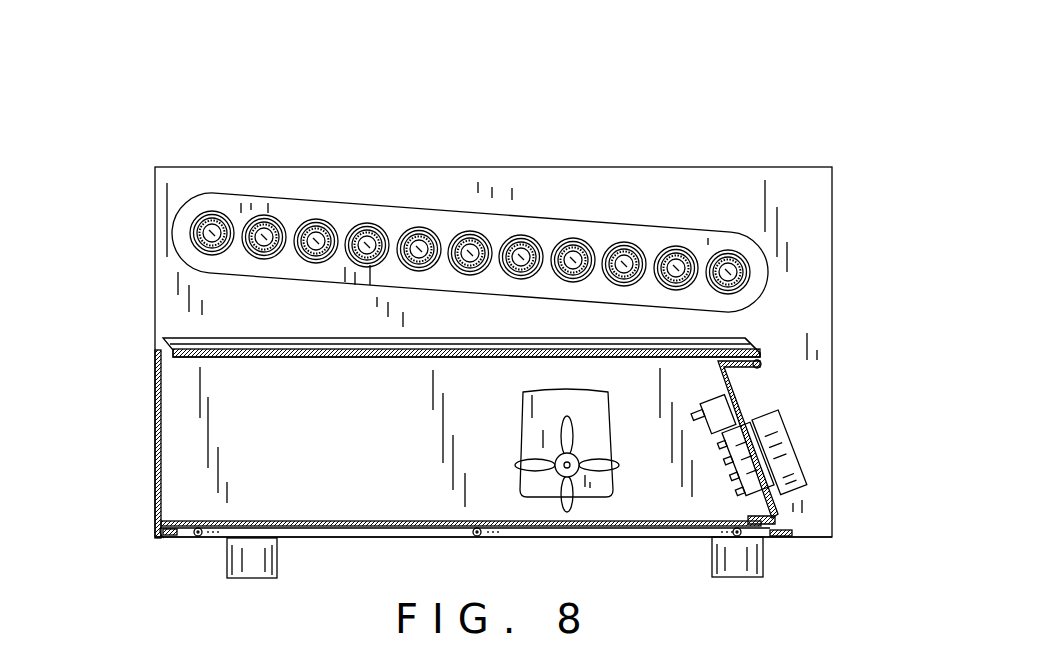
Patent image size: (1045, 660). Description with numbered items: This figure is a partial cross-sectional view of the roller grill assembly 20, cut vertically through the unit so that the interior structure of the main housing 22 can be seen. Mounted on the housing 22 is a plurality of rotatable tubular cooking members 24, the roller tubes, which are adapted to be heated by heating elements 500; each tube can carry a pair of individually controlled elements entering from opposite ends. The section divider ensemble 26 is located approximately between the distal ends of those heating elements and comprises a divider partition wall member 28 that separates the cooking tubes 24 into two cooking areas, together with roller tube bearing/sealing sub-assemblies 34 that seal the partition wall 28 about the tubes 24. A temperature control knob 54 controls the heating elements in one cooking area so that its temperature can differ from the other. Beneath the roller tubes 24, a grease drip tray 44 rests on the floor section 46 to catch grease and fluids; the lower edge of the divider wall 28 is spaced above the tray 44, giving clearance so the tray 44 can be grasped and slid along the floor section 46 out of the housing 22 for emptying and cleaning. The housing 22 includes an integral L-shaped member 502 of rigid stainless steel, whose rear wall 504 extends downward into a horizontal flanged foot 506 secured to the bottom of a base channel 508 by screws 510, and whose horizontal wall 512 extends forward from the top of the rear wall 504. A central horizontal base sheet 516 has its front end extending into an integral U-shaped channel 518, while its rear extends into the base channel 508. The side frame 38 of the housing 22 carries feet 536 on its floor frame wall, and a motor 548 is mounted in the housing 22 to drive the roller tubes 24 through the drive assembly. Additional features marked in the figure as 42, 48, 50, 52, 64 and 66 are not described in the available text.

The roller grill assembly 20 is at (204, 126).
The main housing 22 is at (799, 154).
The rotatable tubular cooking members 24 is at (222, 218).
The section divider ensemble 26 is at (278, 188).
The divider partition wall member 28 is at (602, 237).
The roller tube bearing/sealing sub-assemblies 34 is at (363, 222).
The side frame 38 is at (443, 144).
The belt segment 42 is at (403, 200).
The grease drip tray 44 is at (193, 342).
The floor section 46 is at (760, 346).
The electrical connector 48 is at (812, 424).
The mounting bracket 50 is at (717, 383).
The control module 52 is at (810, 449).
The temperature control knob 54 is at (808, 477).
The belt end 64 is at (770, 268).
The belt drive end 66 is at (175, 220).
The heating elements 500 is at (572, 255).
The L-shaped member 502 is at (218, 370).
The rear wall 504 is at (157, 415).
The horizontal flanged foot 506 is at (158, 540).
The base channel 508 is at (173, 514).
The screws 510 is at (167, 540).
The horizontal wall 512 is at (312, 360).
The central horizontal base sheet 516 is at (393, 528).
The U-shaped channel 518 is at (786, 544).
The feet 536 is at (245, 578).
The motor 548 is at (522, 412).